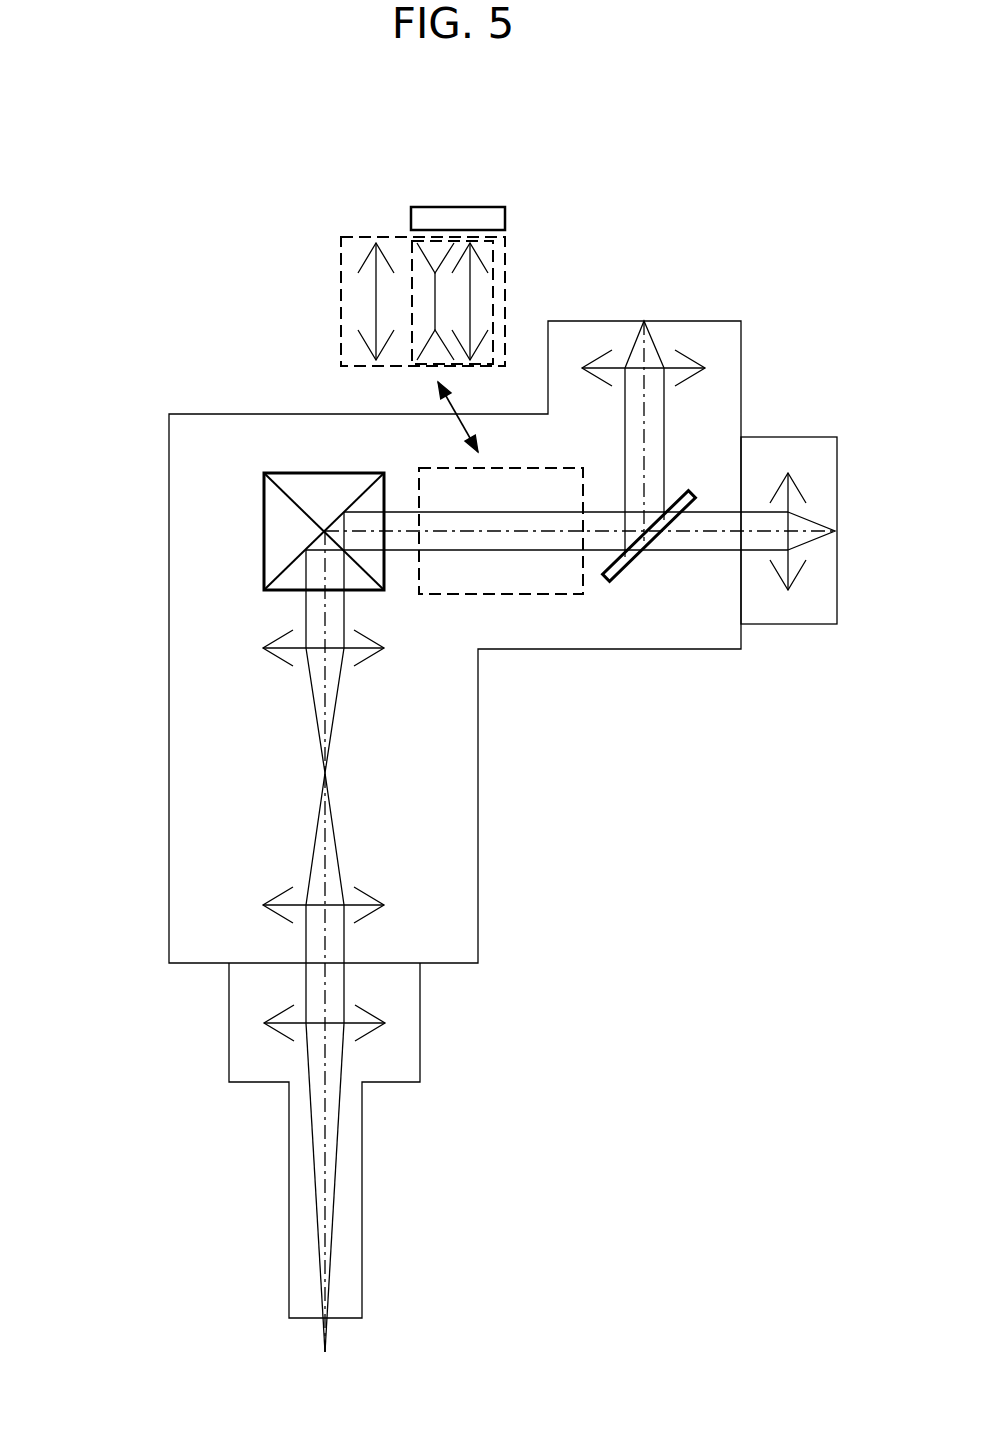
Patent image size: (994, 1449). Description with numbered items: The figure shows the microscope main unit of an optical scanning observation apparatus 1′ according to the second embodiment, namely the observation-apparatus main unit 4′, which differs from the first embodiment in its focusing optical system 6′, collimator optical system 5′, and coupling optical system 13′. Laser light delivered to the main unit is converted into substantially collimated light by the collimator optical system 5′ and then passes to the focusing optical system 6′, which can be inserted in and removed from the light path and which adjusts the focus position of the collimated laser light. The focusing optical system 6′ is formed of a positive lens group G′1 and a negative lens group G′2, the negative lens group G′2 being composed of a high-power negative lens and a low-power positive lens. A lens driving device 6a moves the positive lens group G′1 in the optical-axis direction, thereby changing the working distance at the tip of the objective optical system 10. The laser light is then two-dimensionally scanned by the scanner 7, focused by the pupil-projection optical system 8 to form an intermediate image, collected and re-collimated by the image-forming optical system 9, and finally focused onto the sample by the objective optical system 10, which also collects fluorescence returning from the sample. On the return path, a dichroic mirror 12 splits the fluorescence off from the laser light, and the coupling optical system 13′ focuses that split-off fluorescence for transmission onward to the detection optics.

The optical scanning observation apparatus 1′ is at (100, 284).
The observation-apparatus main unit 4′ is at (612, 788).
The collimator optical system 5′ is at (718, 352).
The focusing optical system 6′ is at (442, 239).
The lens driving device 6a is at (470, 207).
The positive lens group G′1 is at (350, 305).
The negative lens group G′2 is at (520, 276).
The scanner 7 is at (264, 538).
The pupil-projection optical system 8 is at (371, 655).
The image-forming optical system 9 is at (365, 893).
The objective optical system 10 is at (370, 1032).
The dichroic mirror 12 is at (629, 563).
The coupling optical system 13′ is at (818, 478).